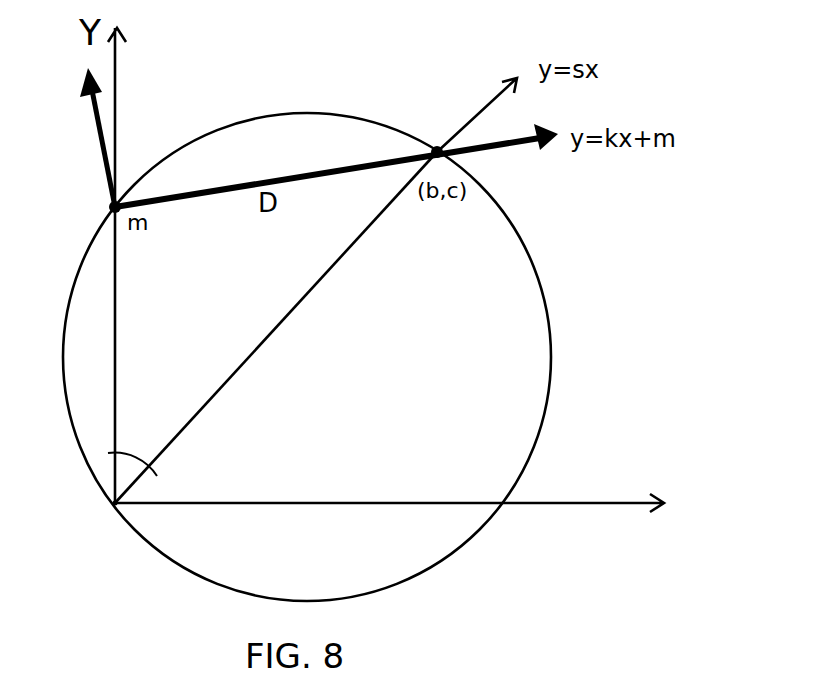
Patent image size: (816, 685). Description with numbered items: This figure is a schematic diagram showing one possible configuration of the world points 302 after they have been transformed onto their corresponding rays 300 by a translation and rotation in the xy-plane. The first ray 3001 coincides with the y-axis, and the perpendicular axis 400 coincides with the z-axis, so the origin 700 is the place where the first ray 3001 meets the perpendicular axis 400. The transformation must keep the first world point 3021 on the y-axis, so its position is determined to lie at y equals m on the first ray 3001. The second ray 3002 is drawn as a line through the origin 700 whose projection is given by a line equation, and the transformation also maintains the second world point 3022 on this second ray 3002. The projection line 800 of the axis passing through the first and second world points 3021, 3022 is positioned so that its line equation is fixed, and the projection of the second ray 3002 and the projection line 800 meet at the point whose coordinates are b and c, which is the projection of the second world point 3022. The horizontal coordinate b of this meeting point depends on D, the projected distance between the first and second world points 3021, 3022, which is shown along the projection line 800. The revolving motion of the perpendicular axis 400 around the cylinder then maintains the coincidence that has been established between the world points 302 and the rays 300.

The rays 300 is at (304, 119).
The first ray 3001 is at (119, 102).
The second ray 3002 is at (470, 118).
The world points 302 is at (301, 183).
The first world point 3021 is at (106, 205).
The second world point 3022 is at (472, 153).
The perpendicular axis 400 is at (293, 503).
The origin 700 is at (112, 504).
The projection line 800 is at (233, 182).